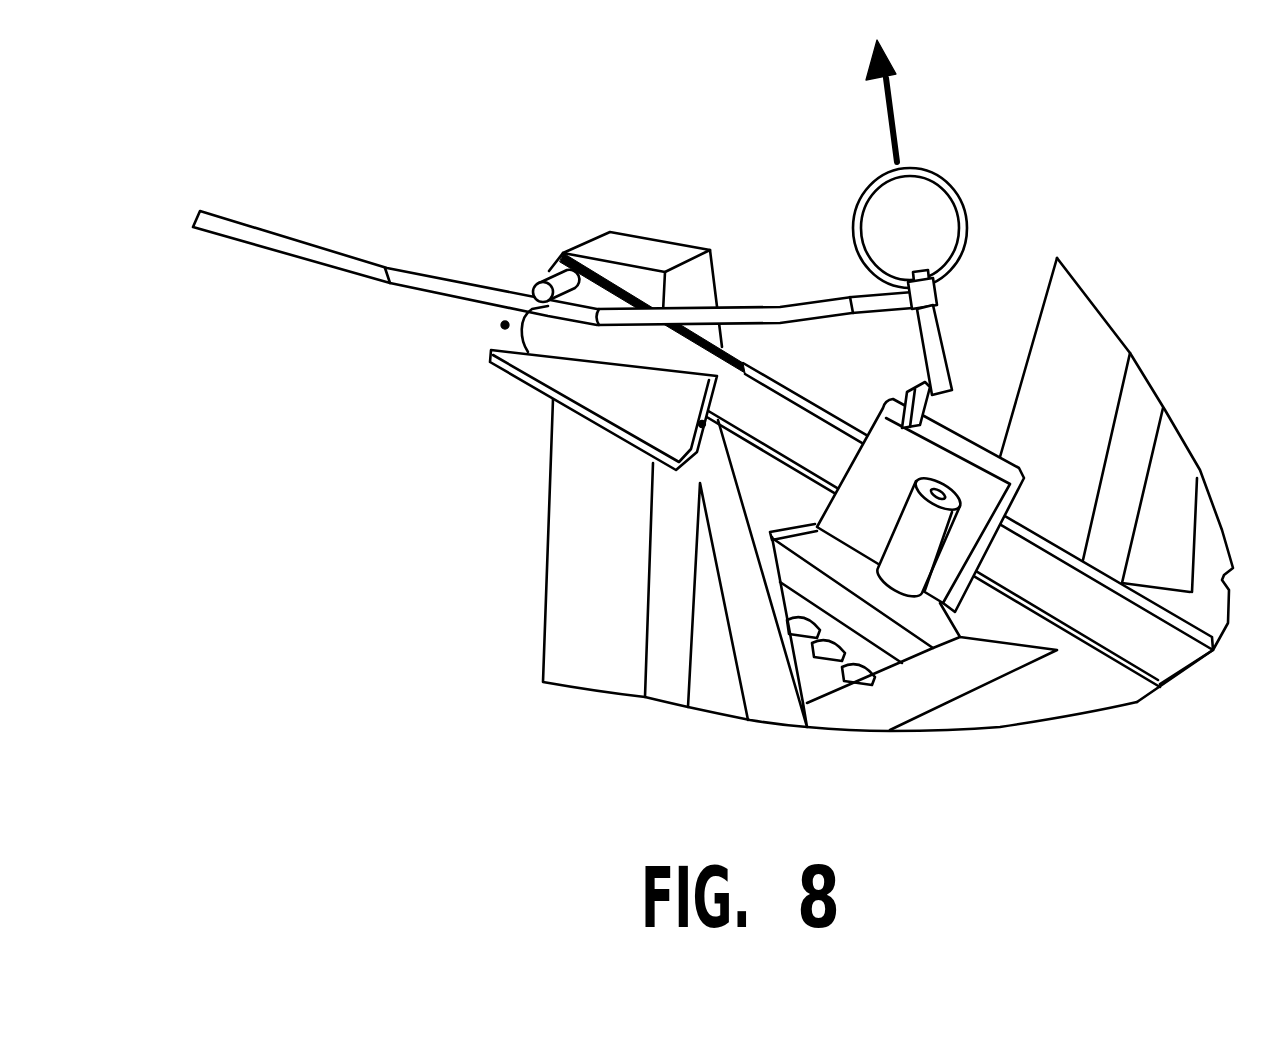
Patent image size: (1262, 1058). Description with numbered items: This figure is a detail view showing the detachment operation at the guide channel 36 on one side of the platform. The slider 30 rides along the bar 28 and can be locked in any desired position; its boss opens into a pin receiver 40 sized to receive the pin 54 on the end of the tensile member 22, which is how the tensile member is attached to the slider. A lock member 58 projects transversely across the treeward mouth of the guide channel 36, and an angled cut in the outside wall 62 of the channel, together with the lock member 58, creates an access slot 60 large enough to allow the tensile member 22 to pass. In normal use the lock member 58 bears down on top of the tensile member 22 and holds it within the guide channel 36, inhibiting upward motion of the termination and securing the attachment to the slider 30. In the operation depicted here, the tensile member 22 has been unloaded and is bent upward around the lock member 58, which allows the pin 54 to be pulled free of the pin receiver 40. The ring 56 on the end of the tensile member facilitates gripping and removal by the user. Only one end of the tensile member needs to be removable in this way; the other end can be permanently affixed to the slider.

The tensile member 22 is at (272, 238).
The bar 28 is at (1122, 643).
The slider 30 is at (947, 593).
The guide channel 36 is at (703, 428).
The pin receiver 40 is at (940, 490).
The pin 54 is at (937, 330).
The ring 56 is at (943, 183).
The lock member 58 is at (547, 277).
The access slot 60 is at (503, 327).
The outside wall 62 is at (558, 373).